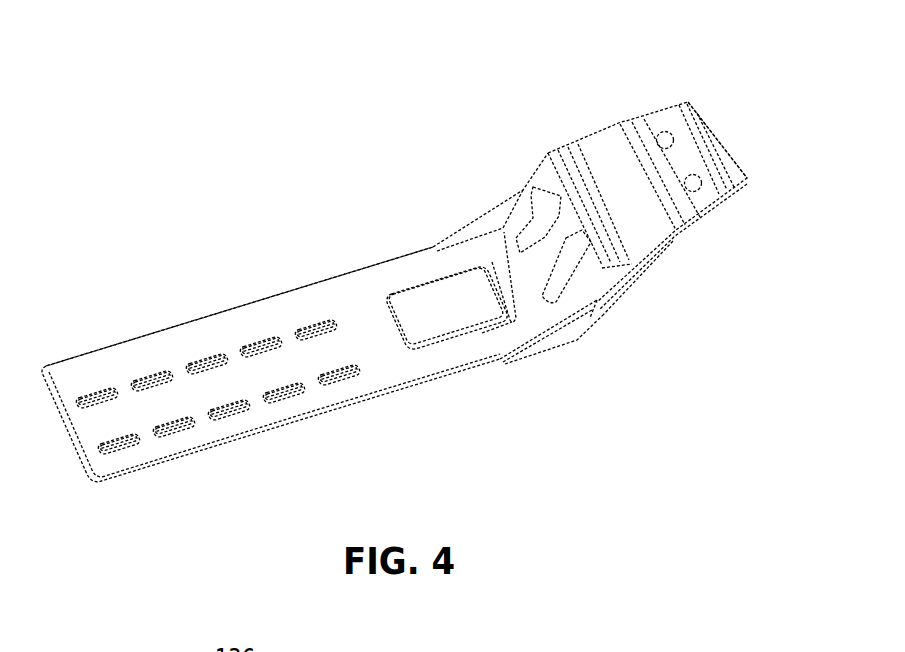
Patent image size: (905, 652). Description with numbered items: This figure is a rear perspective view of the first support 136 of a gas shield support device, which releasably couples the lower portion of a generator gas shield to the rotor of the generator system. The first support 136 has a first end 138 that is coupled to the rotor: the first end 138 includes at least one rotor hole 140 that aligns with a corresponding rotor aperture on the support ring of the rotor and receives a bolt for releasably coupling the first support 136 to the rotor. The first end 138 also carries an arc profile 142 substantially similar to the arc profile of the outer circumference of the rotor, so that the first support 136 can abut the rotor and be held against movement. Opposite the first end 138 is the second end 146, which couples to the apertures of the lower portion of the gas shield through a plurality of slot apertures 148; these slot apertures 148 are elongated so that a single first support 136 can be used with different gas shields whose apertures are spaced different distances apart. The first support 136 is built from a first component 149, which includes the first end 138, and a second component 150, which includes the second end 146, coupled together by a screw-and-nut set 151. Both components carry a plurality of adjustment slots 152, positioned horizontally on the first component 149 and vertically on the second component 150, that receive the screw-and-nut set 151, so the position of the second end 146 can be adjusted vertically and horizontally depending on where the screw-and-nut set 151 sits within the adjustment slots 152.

The first support 136 is at (291, 188).
The first end 138 is at (695, 118).
The rotor hole 140 is at (663, 137).
The arc profile 142 is at (736, 122).
The second end 146 is at (209, 342).
The slot apertures 148 is at (84, 410).
The first component 149 is at (588, 156).
The second component 150 is at (549, 167).
The screw-and-nut set 151 is at (531, 218).
The adjustment slots 152 is at (560, 272).